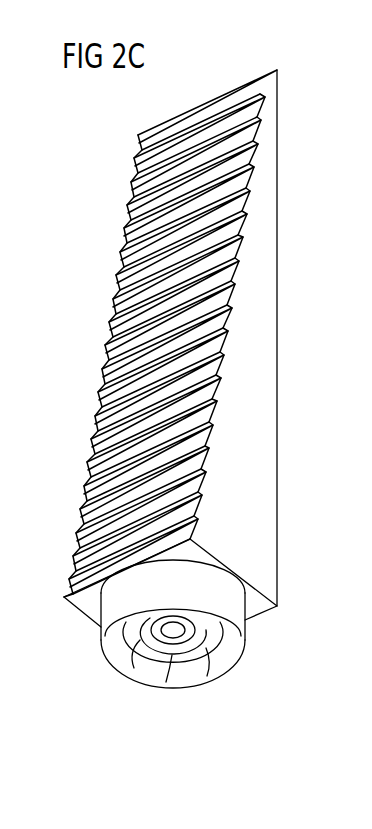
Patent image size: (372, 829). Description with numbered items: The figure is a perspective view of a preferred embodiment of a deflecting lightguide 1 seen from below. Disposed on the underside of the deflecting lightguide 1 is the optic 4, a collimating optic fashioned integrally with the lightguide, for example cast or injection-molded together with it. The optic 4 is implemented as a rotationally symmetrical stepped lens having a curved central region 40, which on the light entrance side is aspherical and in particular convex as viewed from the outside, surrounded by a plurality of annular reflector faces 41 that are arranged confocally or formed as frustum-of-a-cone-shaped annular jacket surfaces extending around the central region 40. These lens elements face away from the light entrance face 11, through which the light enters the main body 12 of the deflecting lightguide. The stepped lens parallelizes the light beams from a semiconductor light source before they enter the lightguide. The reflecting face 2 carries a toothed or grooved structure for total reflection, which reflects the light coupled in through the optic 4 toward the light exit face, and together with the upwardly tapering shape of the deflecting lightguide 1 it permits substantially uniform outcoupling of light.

The deflecting lightguide 1 is at (107, 183).
The reflecting face 2 is at (117, 297).
The optic 4 is at (222, 665).
The light entrance face 11 is at (253, 603).
The main body 12 is at (253, 345).
The curved central region 40 is at (167, 643).
The annular reflector faces 41 is at (198, 647).